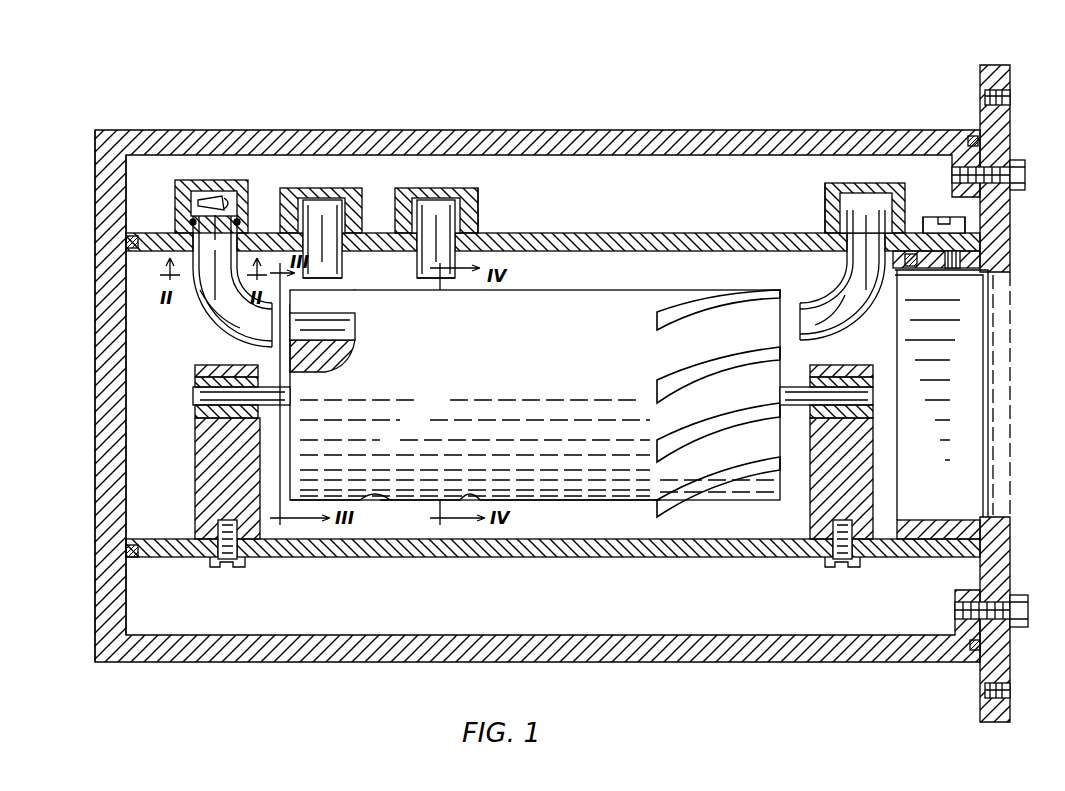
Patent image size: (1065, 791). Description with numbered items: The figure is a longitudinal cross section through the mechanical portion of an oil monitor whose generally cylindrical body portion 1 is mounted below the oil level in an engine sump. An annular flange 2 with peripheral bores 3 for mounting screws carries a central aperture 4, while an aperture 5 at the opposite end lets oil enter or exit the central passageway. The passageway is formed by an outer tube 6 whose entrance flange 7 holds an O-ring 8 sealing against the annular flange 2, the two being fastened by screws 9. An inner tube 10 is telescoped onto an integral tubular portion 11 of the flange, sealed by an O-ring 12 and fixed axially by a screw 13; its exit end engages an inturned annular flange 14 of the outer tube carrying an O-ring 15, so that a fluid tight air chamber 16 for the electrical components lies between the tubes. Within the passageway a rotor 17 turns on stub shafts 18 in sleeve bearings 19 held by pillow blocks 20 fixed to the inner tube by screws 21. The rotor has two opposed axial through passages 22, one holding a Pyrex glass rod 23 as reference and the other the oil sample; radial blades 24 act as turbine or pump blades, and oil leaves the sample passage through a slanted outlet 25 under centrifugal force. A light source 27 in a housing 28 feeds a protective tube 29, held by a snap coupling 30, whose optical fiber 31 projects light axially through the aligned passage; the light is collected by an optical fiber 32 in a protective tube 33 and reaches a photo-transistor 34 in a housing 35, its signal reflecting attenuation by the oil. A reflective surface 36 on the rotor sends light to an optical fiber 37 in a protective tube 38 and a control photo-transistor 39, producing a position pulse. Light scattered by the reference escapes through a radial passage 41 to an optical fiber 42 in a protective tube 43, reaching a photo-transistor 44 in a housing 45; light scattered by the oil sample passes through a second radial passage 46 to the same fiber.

The body portion 1 is at (638, 106).
The annular flange 2 is at (1000, 75).
The threaded or through bores 3 is at (1010, 98).
The central aperture 4 is at (1026, 370).
The aperture 5 is at (83, 318).
The outer tube 6 is at (783, 130).
The entrance flange 7 is at (955, 195).
The O-ring 8 is at (985, 131).
The screws 9 is at (1030, 180).
The inner tube 10 is at (645, 235).
The tubular portion 11 is at (910, 268).
The O-ring 12 is at (935, 268).
The screw 13 is at (935, 217).
The inturned annular flange 14 is at (95, 175).
The O-ring 15 is at (128, 250).
The air chamber 16 is at (742, 191).
The rotor 17 is at (565, 390).
The stub shafts 18 is at (197, 396).
The sleeve bearings 19 is at (197, 380).
The pillow blocks 20 is at (198, 470).
The screws 21 is at (242, 565).
The through passage 22 is at (345, 352).
The Pyrex glass rod 23 is at (350, 330).
The blades or vanes 24 is at (735, 298).
The slanted outlet 25 is at (375, 500).
The light source 27 is at (215, 195).
The housing 28 is at (240, 190).
The protective tube 29 is at (215, 305).
The O-ring or snap coupling 30 is at (240, 222).
The optical fiber 31 is at (237, 320).
The optical fiber 32 is at (842, 333).
The protective tube 33 is at (835, 300).
The photo-transistor 34 is at (890, 185).
The housing 35 is at (827, 195).
The reflective surface 36 is at (325, 297).
The optical fiber 37 is at (345, 266).
The protective tube 38 is at (345, 278).
The control photo-transistor 39 is at (330, 200).
The radial passage 41 is at (448, 290).
The optical fiber 42 is at (462, 262).
The protective tube 43 is at (420, 280).
The photo-transistor 44 is at (462, 190).
The housing 45 is at (478, 210).
The radial passage 46 is at (458, 500).